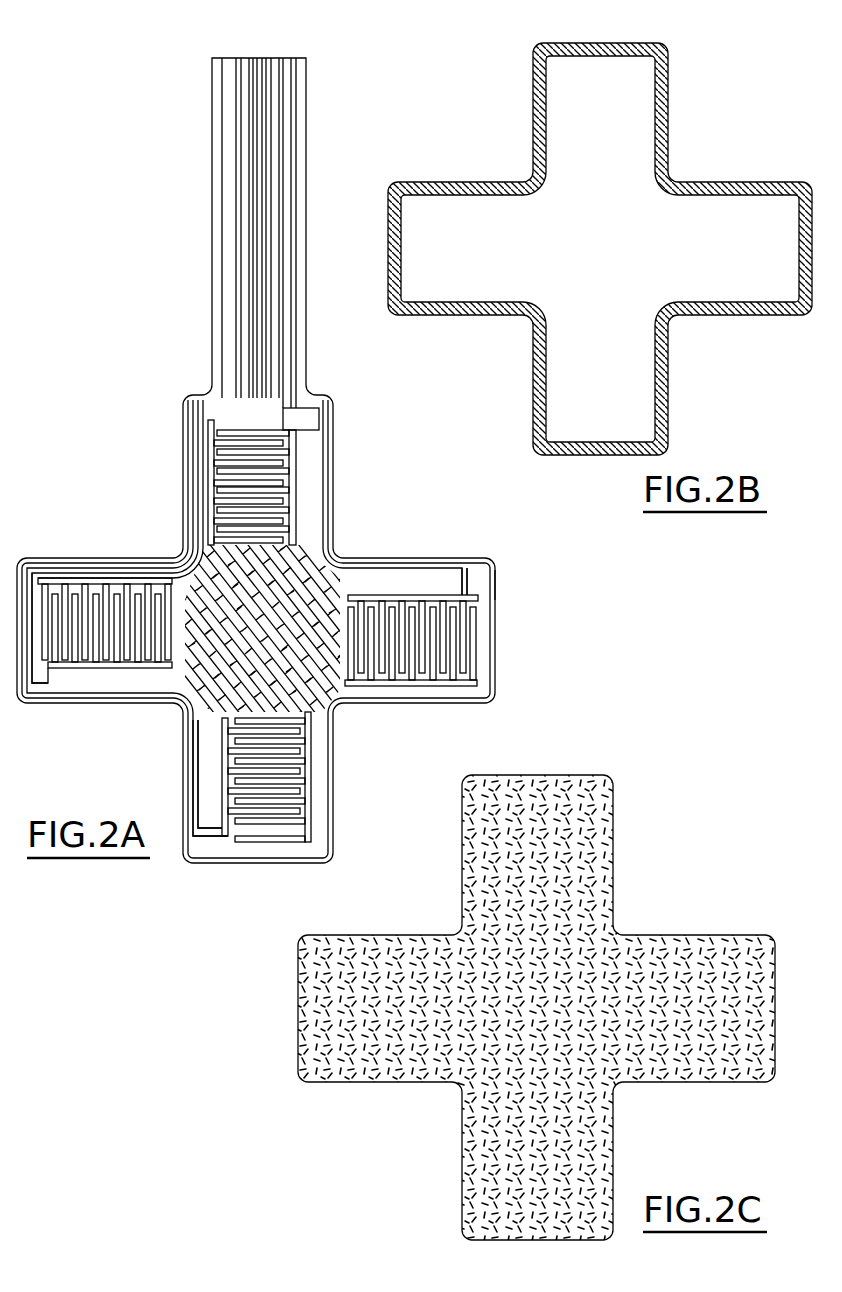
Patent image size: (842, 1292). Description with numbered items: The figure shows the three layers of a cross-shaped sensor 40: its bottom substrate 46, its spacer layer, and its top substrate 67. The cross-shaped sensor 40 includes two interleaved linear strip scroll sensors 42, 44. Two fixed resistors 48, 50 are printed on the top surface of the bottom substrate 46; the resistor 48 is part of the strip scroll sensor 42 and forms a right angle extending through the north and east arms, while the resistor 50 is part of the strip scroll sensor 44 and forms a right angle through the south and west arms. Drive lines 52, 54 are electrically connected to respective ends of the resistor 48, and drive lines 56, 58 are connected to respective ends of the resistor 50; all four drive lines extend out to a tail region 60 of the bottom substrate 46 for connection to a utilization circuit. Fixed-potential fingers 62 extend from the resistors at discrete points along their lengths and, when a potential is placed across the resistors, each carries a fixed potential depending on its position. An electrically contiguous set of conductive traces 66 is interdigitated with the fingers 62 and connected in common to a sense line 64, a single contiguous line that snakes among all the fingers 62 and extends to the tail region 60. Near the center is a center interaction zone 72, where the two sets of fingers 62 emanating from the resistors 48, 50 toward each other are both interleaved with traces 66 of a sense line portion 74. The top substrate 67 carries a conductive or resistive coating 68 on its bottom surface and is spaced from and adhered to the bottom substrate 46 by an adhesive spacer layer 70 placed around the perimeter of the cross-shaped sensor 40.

In FIG. 2A, the cross-shaped sensor 40 is at (412, 382).
In FIG. 2B, the cross-shaped sensor 40 is at (600, 265).
In FIG. 2C, the cross-shaped sensor 40 is at (536, 995).
In FIG. 2A, the strip scroll sensor 42 is at (370, 530).
In FIG. 2A, the strip scroll sensor 44 is at (175, 717).
In FIG. 2A, the bottom substrate 46 is at (211, 424).
In FIG. 2A, the fixed resistor 48 is at (497, 566).
In FIG. 2A, the fixed resistor 50 is at (62, 704).
In FIG. 2A, the drive line 52 is at (273, 57).
In FIG. 2A, the drive line 54 is at (296, 58).
In FIG. 2A, the drive line 56 is at (239, 57).
In FIG. 2A, the drive line 58 is at (214, 57).
In FIG. 2A, the tail region 60 is at (302, 209).
In FIG. 2A, the fixed-potential fingers 62 is at (478, 614).
In FIG. 2A, the sense line 64 is at (258, 57).
In FIG. 2A, the conductive traces 66 is at (214, 470).
In FIG. 2C, the top substrate 67 is at (536, 1007).
In FIG. 2C, the conductive or resistive coating 68 is at (656, 1073).
In FIG. 2B, the adhesive spacer layer 70 is at (534, 454).
In FIG. 2A, the center interaction zone 72 is at (320, 686).
In FIG. 2A, the sense line portion 74 is at (186, 560).